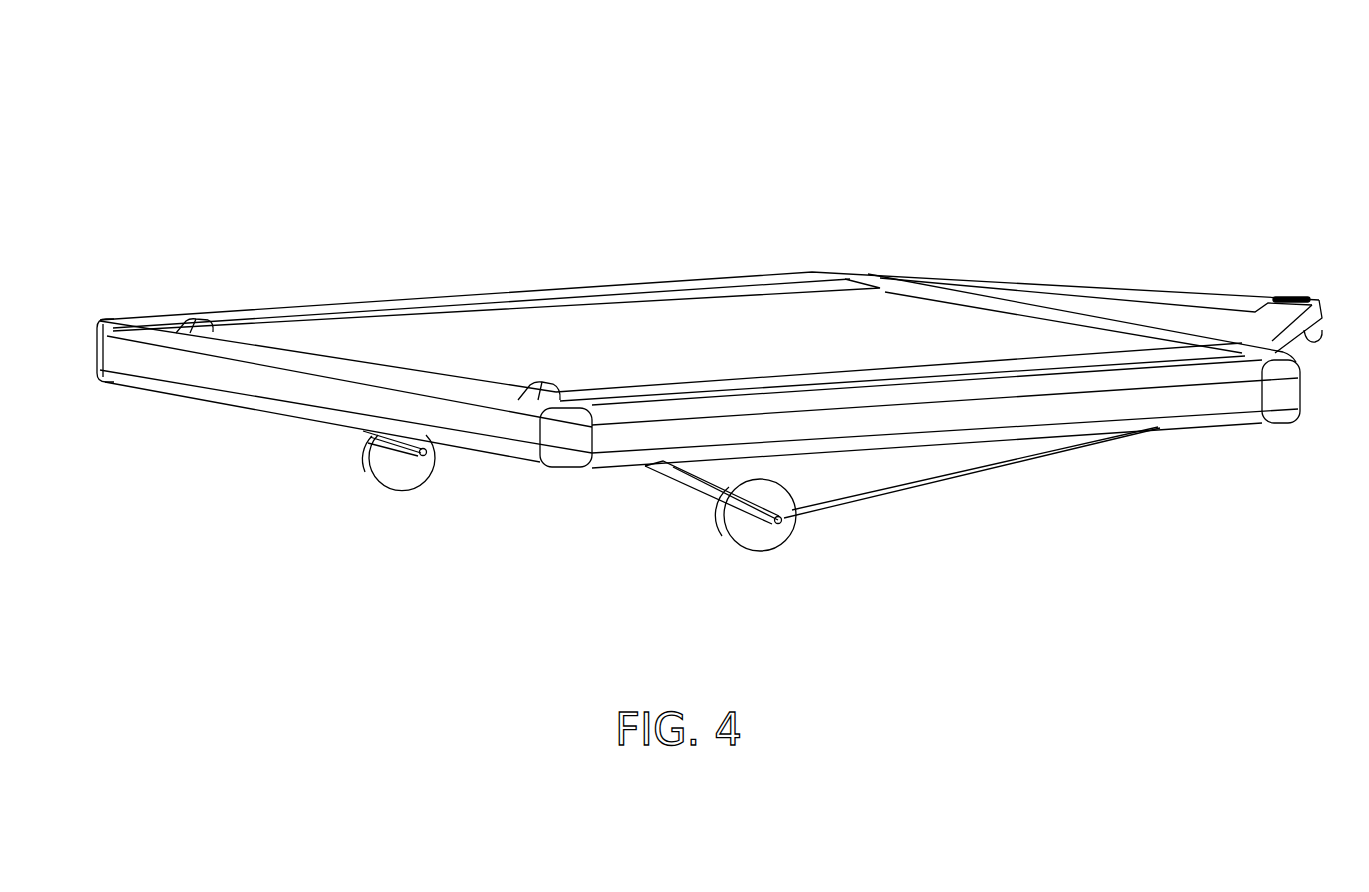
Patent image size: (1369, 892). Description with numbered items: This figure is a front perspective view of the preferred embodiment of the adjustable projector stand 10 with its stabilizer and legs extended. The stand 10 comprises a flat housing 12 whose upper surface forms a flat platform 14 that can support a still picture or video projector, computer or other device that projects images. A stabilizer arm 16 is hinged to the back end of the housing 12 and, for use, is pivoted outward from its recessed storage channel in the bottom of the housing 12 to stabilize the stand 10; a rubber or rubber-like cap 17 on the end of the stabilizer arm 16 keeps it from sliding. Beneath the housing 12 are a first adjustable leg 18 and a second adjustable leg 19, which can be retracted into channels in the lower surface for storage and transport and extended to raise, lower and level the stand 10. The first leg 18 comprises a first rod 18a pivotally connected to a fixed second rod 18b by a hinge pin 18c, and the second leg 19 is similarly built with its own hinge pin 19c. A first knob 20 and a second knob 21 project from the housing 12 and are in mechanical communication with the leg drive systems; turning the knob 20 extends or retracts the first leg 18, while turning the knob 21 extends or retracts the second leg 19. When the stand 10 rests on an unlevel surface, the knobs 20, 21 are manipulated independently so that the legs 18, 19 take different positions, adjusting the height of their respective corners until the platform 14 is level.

The projector stand 10 is at (392, 178).
The flat housing 12 is at (317, 371).
The platform 14 is at (592, 322).
The stabilizer arm 16 is at (1193, 292).
The cap 17 is at (1323, 338).
The first adjustable leg 18 is at (720, 568).
The first rod 18a is at (690, 488).
The fixed second rod 18b is at (910, 487).
The hinge pin 18c is at (772, 538).
The second adjustable leg 19 is at (340, 472).
The front wheel 19c is at (387, 474).
The first knob 20 is at (541, 383).
The second knob 21 is at (201, 318).